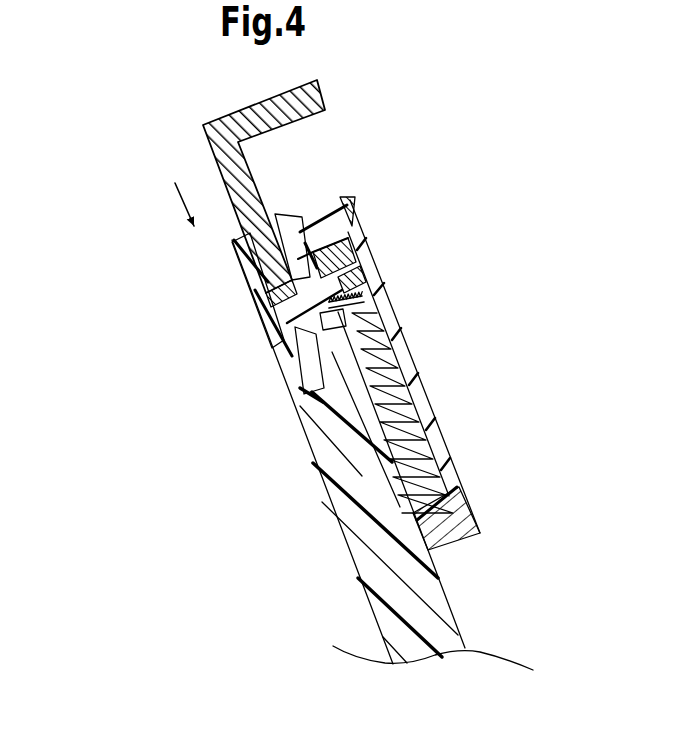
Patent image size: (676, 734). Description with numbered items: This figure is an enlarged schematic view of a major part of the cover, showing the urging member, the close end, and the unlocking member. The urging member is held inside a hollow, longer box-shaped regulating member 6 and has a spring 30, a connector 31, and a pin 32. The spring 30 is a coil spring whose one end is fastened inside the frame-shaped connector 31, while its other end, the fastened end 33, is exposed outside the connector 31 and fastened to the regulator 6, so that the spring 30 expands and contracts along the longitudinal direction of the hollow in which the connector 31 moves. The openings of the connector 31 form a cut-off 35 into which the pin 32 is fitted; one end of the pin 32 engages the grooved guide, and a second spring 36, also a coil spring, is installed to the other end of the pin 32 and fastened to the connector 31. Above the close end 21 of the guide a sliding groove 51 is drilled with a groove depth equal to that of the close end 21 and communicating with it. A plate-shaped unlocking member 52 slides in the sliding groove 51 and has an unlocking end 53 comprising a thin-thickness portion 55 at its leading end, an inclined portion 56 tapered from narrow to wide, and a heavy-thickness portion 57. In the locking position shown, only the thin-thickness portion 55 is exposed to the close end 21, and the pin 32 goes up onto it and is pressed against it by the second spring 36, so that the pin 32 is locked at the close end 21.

The regulating member 6 is at (398, 342).
The close end 21 is at (356, 256).
The spring 30 is at (410, 390).
The connector 31 is at (350, 240).
The pin 32 is at (315, 405).
The fastened end 33 is at (420, 500).
The cut-off 35 is at (362, 270).
The second spring 36 is at (362, 300).
The sliding groove 51 is at (267, 282).
The unlocking member 52 is at (217, 158).
The unlocking end 53 is at (271, 312).
The thin-thickness portion 55 is at (272, 350).
The inclined portion 56 is at (300, 214).
The heavy-thickness portion 57 is at (268, 204).